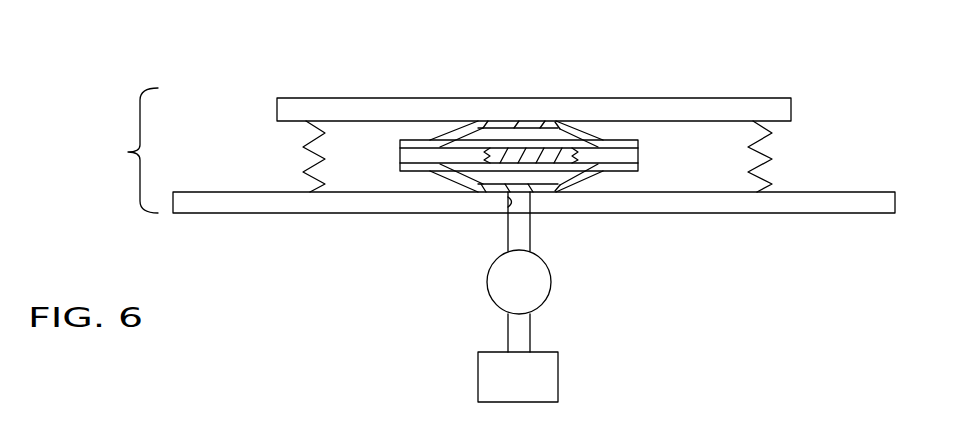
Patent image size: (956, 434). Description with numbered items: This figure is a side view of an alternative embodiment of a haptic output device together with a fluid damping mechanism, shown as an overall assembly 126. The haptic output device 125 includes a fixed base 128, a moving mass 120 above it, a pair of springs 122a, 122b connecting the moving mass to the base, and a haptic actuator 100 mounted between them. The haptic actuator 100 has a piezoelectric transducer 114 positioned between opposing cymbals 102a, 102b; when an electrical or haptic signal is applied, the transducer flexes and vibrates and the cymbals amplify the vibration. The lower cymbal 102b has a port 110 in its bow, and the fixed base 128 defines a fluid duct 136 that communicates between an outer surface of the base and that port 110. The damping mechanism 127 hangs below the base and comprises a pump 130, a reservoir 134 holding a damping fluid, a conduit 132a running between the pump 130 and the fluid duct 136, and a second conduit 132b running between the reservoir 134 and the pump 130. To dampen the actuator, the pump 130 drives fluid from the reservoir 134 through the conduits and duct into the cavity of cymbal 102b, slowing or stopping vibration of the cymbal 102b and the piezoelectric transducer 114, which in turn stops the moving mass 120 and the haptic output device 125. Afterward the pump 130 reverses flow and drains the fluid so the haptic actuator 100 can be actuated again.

The haptic actuator 100 is at (545, 142).
The cymbal 102a is at (577, 128).
The cymbal 102b is at (640, 172).
The port 110 is at (530, 192).
The piezoelectric transducer 114 is at (645, 140).
The moving mass 120 is at (791, 101).
The spring 122a is at (303, 158).
The spring 122b is at (765, 162).
The haptic output device 125 is at (128, 152).
The sensing system 126 is at (213, 104).
The damping mechanism 127 is at (483, 292).
The fixed base 128 is at (790, 214).
The pump 130 is at (553, 283).
The conduit 132a is at (533, 246).
The conduit 132b is at (533, 328).
The reservoir 134 is at (558, 378).
The fluid duct 136 is at (505, 207).